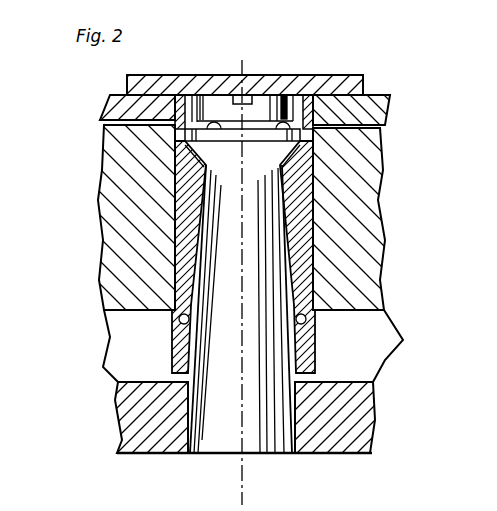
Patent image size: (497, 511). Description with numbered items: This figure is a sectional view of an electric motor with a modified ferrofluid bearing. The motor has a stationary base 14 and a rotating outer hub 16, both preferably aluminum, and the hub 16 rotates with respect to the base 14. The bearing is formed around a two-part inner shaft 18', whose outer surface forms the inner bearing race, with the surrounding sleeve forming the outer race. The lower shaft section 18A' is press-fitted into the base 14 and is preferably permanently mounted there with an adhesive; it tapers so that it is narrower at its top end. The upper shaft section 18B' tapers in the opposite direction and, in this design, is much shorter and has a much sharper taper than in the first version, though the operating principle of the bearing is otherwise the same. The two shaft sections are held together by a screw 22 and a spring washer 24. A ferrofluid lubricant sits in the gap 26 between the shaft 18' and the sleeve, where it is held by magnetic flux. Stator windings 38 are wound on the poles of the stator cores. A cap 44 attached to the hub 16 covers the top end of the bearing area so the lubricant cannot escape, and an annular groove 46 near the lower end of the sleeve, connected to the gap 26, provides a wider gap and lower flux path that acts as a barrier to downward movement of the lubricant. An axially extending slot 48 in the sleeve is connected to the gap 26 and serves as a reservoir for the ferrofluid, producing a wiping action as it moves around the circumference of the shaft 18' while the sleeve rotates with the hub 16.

The stationary base 14 is at (155, 452).
The rotating outer hub 16 is at (110, 101).
The shaft 18' is at (233, 337).
The lower shaft section 18A' is at (255, 333).
The upper shaft section 18B' is at (311, 146).
The screw 22 is at (213, 102).
The spring washer 24 is at (278, 102).
The gap 26 is at (241, 234).
The stator windings 38 is at (115, 147).
The cap 44 is at (313, 81).
The annular groove 46 is at (180, 321).
The slot 48 is at (288, 232).